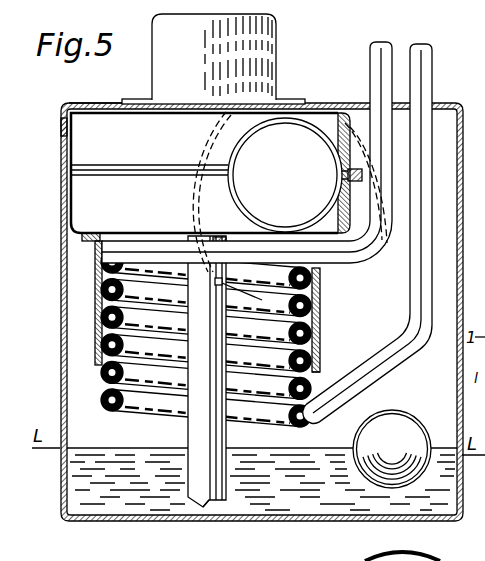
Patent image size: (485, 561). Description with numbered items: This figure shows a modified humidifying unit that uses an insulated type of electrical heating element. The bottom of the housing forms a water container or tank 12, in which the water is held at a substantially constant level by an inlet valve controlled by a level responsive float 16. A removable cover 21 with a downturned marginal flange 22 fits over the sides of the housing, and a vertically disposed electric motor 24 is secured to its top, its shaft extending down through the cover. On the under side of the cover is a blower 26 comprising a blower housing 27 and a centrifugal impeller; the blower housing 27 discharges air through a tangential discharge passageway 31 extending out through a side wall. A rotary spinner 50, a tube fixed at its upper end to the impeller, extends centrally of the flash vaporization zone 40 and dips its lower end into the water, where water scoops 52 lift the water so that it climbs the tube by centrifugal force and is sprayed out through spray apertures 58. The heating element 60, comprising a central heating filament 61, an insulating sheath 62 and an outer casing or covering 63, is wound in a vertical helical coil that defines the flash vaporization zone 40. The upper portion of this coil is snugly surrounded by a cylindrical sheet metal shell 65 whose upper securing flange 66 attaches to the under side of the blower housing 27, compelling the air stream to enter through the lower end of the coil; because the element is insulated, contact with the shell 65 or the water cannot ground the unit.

The water container or tank 12 is at (76, 492).
The level responsive float 16 is at (402, 415).
The removable cover 21 is at (72, 103).
The downturned marginal flange 22 is at (64, 127).
The electric motor 24 is at (213, 59).
The blower 26 is at (95, 146).
The blower housing 27 is at (88, 187).
The tangential discharge passageway 31 is at (233, 148).
The flash vaporization zone 40 is at (194, 315).
The rotary spinner 50 is at (227, 418).
The water scoops 52 is at (206, 503).
The spray apertures 58 is at (197, 304).
The insulated electrical heating element 60 is at (157, 283).
The central heating filament 61 is at (361, 277).
The insulating sheath 62 is at (320, 305).
The outer casing or covering 63 is at (320, 318).
The cylindrical sheet metal shell 65 is at (100, 300).
The upper securing flange 66 is at (92, 233).